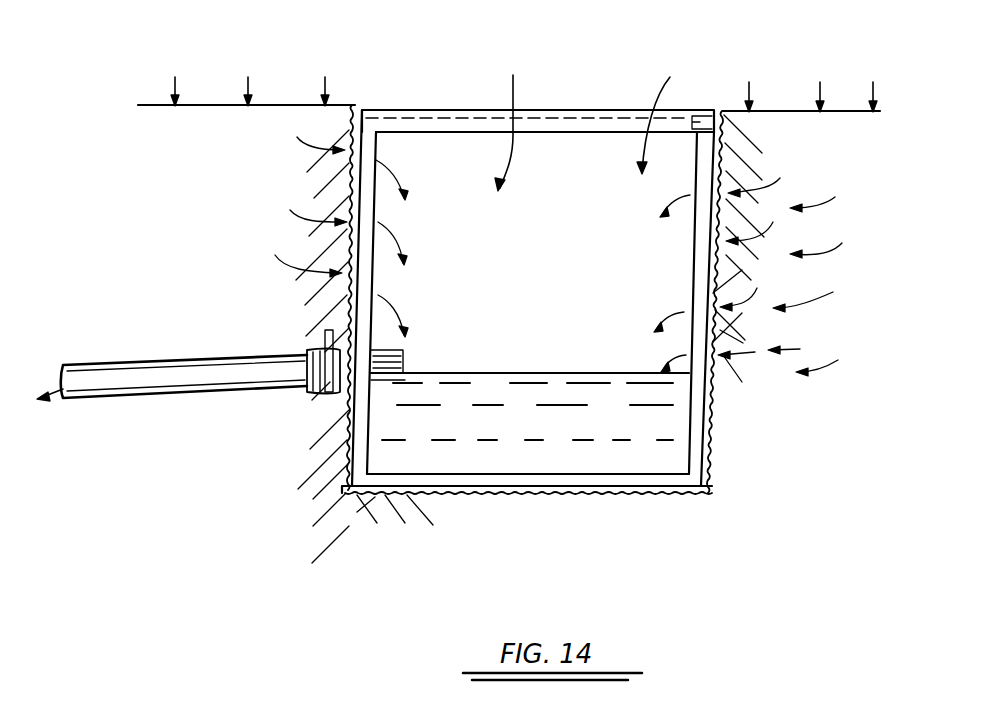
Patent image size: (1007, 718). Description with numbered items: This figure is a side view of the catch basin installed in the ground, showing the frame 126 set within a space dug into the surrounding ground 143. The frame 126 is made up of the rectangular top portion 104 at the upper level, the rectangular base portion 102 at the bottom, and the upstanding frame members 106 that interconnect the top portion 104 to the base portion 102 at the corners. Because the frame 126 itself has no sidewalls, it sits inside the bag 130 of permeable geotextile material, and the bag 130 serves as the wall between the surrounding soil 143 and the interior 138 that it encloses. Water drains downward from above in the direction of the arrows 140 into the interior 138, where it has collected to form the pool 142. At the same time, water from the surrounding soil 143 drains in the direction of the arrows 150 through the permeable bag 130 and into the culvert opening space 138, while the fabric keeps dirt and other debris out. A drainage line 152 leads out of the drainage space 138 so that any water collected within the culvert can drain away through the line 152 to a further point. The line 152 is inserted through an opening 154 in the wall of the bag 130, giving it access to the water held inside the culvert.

The base portion 102 is at (355, 505).
The top portion 104 is at (457, 110).
The upstanding frame members 106 is at (327, 230).
The catch basin frame 126 is at (584, 92).
The bag 130 is at (716, 160).
The interior of the bag 138 is at (583, 237).
The arrows 140 is at (515, 92).
The pool 142 is at (525, 410).
The surrounding ground 143 is at (265, 200).
The arrows 150 is at (827, 247).
The drainage line 152 is at (172, 373).
The opening 154 is at (308, 388).